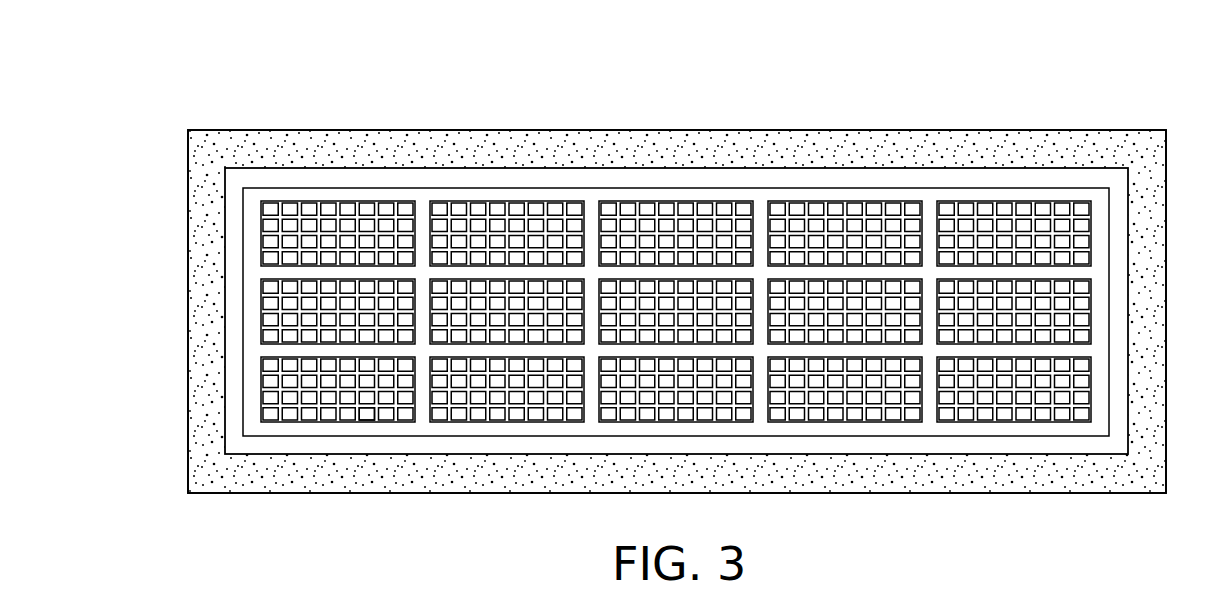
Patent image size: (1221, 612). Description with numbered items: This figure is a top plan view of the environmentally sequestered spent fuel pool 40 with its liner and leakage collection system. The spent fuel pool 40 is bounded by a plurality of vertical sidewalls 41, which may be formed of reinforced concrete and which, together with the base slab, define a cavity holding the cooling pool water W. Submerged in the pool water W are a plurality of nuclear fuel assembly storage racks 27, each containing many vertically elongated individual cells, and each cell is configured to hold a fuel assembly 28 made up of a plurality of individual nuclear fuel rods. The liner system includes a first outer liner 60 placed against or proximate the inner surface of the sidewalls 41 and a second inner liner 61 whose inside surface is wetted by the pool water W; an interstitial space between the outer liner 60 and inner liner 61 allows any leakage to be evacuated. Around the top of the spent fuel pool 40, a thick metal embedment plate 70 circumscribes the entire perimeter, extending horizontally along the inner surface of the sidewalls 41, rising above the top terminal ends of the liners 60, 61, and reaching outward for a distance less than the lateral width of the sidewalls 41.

The spent fuel pool 40 is at (333, 92).
The vertical sidewalls 41 is at (1168, 367).
The embedment plate 70 is at (1128, 205).
The first outer liner 60 is at (676, 374).
The second inner liner 61 is at (922, 435).
The fuel assembly 28 is at (290, 412).
The fuel assembly storage rack 27 is at (360, 412).
The cooling pool water W is at (592, 421).